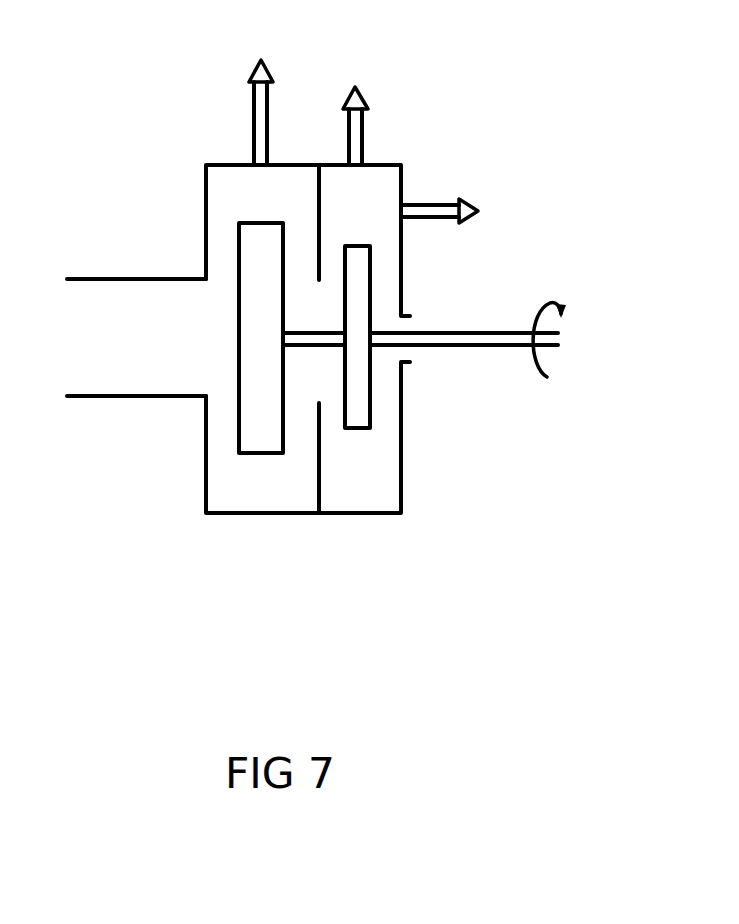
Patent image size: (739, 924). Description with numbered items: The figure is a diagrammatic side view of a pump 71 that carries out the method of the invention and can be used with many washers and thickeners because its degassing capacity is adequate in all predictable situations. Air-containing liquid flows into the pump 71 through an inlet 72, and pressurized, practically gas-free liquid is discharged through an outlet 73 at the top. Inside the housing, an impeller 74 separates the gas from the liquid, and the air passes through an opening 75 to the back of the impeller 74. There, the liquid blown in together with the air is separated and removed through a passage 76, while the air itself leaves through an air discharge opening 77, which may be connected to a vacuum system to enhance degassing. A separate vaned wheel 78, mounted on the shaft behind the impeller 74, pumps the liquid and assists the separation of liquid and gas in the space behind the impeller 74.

The pump 71 is at (182, 509).
The inlet 72 is at (108, 333).
The outlet 73 is at (256, 121).
The impeller 74 is at (262, 443).
The opening 75 is at (315, 382).
The passage 76 is at (357, 128).
The air discharge opening 77 is at (427, 208).
The vaned wheel 78 is at (354, 420).